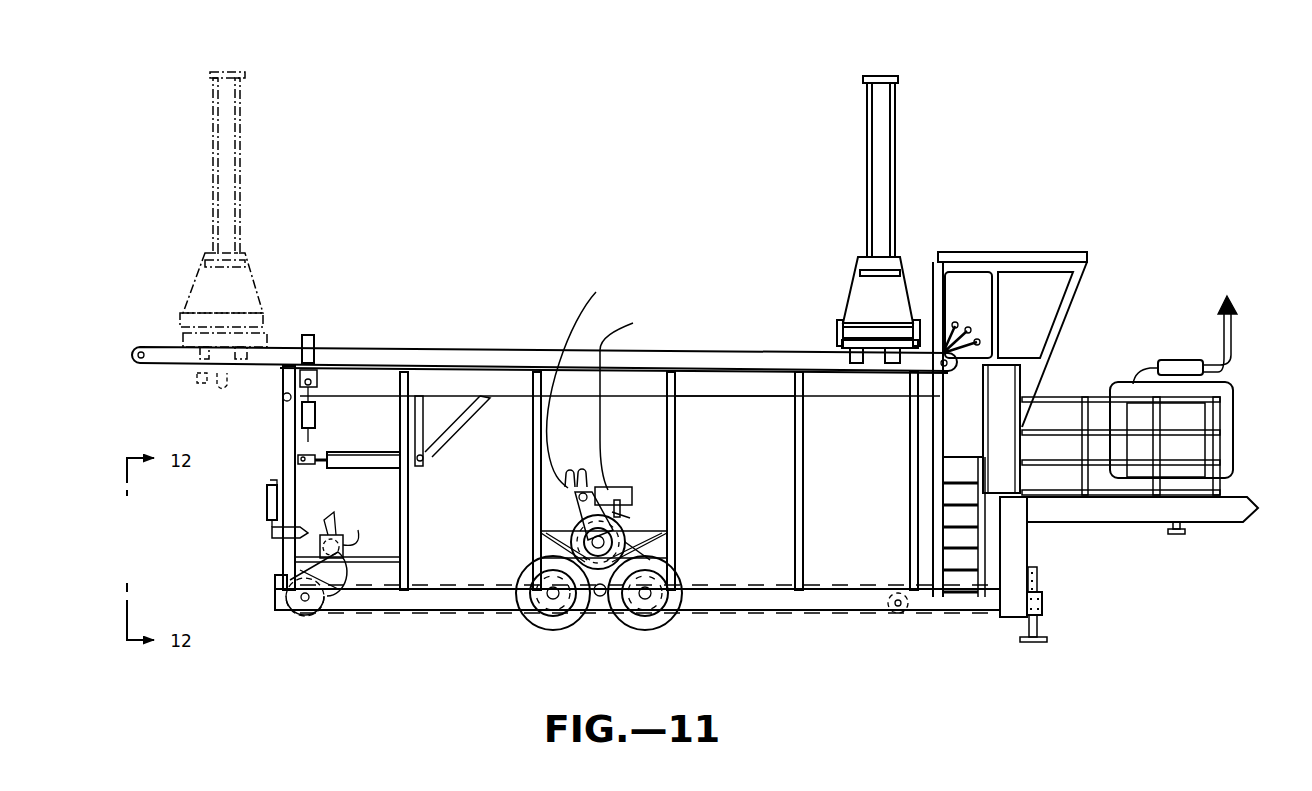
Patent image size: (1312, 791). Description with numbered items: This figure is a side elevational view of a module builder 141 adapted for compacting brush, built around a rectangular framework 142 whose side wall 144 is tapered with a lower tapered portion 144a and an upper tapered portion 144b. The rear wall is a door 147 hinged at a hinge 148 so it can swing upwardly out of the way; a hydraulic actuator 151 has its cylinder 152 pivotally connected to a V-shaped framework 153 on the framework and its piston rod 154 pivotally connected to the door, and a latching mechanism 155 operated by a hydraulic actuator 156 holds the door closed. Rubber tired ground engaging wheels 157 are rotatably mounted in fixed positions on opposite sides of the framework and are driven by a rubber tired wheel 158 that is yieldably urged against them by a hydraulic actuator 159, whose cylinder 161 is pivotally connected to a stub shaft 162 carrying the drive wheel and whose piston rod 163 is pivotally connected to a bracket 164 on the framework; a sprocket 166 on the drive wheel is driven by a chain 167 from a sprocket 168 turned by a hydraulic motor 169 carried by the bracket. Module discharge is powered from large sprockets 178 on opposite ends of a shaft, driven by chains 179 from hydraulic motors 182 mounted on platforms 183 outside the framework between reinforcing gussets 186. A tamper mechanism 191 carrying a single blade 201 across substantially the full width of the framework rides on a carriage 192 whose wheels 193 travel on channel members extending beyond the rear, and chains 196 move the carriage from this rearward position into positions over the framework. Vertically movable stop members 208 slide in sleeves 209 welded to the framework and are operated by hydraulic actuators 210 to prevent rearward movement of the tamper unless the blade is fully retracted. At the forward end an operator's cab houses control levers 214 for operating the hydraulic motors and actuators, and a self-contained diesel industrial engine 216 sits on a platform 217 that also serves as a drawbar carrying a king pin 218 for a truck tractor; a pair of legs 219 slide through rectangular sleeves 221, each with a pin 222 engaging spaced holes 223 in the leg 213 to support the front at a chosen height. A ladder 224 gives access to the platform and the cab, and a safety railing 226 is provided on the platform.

The module builder 141 is at (625, 208).
The rectangular framework 142 is at (553, 332).
The side wall 144 is at (768, 492).
The lower tapered portion 144a is at (760, 557).
The upper tapered portion 144b is at (767, 390).
The door 147 is at (296, 465).
The hinge 148 is at (284, 400).
The hydraulic actuator 151 is at (366, 447).
The cylinder 152 is at (392, 465).
The V-shaped framework 153 is at (430, 458).
The piston rod 154 is at (320, 465).
The latching mechanism 155 is at (280, 540).
The hydraulic actuator 156 is at (266, 511).
The rubber tired ground engaging wheels 157 is at (568, 622).
The rubber tired wheel 158 is at (620, 543).
The hydraulic actuator 159 is at (636, 517).
The cylinder 161 is at (625, 515).
The stub shaft 162 is at (590, 549).
The piston rod 163 is at (648, 487).
The bracket 164 is at (603, 485).
The sprocket 166 is at (584, 537).
The chain 167 is at (576, 510).
The sprocket 168 is at (634, 401).
The hydraulic motor 169 is at (589, 386).
The large sprockets 178 is at (313, 616).
The chains 179 is at (333, 570).
The hydraulic motors 182 is at (352, 520).
The platforms 183 is at (387, 560).
The reinforcing gussets 186 is at (409, 502).
The tamper mechanism 191 is at (258, 150).
The carriage 192 is at (259, 268).
The wheels 193 is at (266, 337).
The chains 196 is at (199, 373).
The blade 201 is at (220, 390).
The stop members 208 is at (318, 338).
The sleeves 209 is at (318, 377).
The hydraulic actuators 210 is at (316, 414).
The leg 213 is at (1028, 262).
The control levers 214 is at (963, 317).
The diesel industrial engine 216 is at (1127, 385).
The platform 217 is at (1232, 515).
The king pin 218 is at (1180, 535).
The legs 219 is at (1040, 628).
The rectangular sleeves 221 is at (1042, 592).
The pin 222 is at (1043, 604).
The holes 223 is at (1038, 572).
The ladder 224 is at (1000, 598).
The safety railing 226 is at (1222, 424).